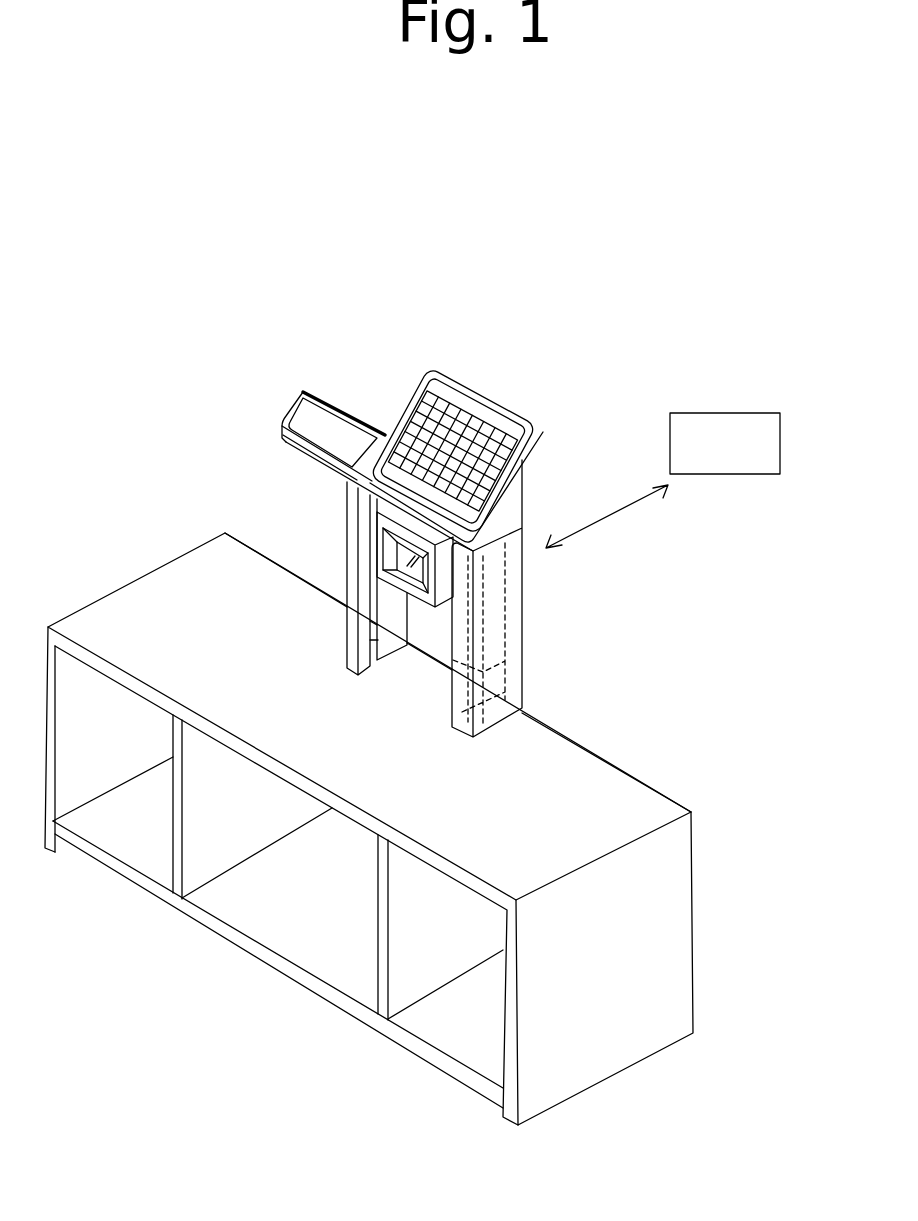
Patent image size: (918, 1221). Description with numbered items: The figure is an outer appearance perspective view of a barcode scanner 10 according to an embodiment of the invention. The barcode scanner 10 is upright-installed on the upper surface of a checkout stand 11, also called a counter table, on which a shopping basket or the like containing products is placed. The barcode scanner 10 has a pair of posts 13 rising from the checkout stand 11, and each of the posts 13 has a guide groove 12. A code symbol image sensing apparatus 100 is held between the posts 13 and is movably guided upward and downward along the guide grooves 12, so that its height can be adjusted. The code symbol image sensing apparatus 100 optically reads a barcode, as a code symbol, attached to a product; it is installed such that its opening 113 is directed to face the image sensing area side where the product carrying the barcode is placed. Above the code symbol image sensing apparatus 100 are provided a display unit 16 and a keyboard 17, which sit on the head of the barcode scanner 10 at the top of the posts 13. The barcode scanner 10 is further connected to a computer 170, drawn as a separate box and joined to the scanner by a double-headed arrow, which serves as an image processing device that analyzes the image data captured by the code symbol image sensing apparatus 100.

The barcode scanner 10 is at (607, 417).
The checkout stand 11 is at (138, 598).
The guide groove 12 is at (374, 652).
The posts 13 is at (348, 537).
The display unit 16 is at (336, 433).
The keyboard 17 is at (462, 427).
The code symbol image sensing apparatus 100 is at (443, 590).
The opening 113 is at (417, 587).
The computer 170 is at (723, 476).